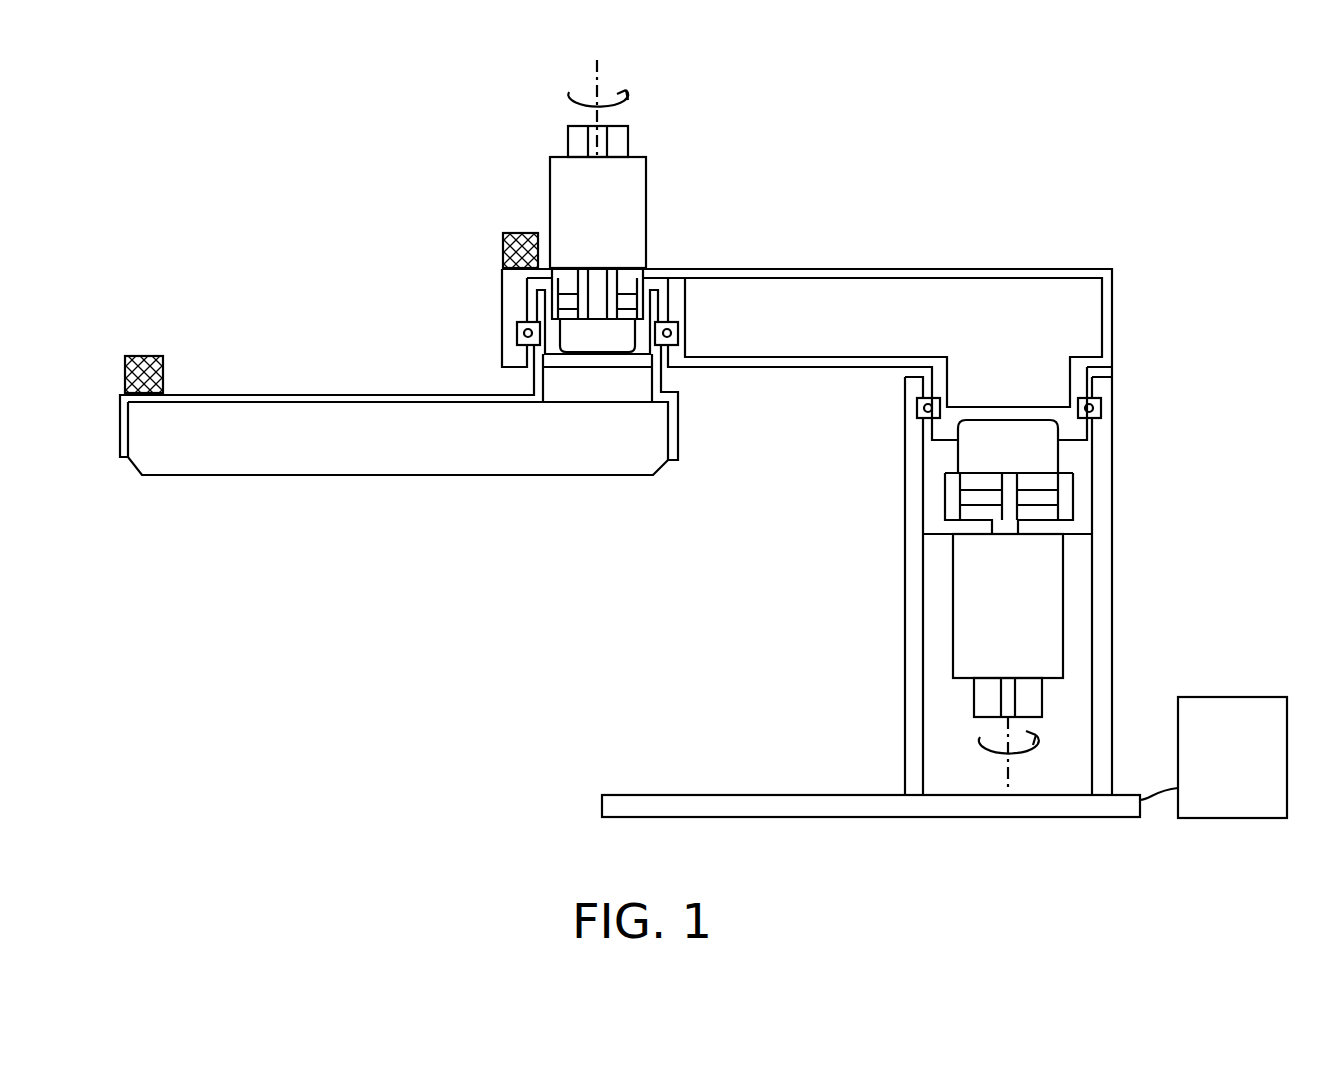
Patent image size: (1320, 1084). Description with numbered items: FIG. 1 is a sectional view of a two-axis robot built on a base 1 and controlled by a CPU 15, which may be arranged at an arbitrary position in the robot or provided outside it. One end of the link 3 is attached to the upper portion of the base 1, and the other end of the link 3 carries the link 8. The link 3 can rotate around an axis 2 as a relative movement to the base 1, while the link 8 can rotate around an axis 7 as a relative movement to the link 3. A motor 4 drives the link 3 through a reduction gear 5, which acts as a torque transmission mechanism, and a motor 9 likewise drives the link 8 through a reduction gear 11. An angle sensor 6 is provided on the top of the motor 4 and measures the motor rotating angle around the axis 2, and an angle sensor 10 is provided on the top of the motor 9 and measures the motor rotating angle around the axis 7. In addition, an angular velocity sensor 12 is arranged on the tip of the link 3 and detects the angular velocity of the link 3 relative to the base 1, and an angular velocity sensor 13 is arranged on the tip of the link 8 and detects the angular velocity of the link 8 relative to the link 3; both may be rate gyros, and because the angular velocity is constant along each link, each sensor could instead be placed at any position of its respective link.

The base 1 is at (693, 795).
The axis 2 is at (1008, 768).
The link 3 is at (838, 269).
The motor 4 is at (953, 620).
The reduction gear 5 is at (958, 456).
The angle sensor 6 is at (974, 700).
The axis 7 is at (597, 72).
The link 8 is at (415, 476).
The motor 9 is at (550, 185).
The angle sensor 10 is at (628, 141).
The reduction gear 11 is at (598, 352).
The angular velocity sensor 12 is at (503, 250).
The angular velocity sensor 13 is at (145, 356).
The CPU 15 is at (1232, 697).